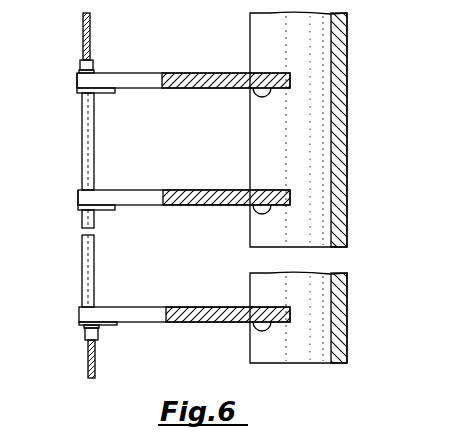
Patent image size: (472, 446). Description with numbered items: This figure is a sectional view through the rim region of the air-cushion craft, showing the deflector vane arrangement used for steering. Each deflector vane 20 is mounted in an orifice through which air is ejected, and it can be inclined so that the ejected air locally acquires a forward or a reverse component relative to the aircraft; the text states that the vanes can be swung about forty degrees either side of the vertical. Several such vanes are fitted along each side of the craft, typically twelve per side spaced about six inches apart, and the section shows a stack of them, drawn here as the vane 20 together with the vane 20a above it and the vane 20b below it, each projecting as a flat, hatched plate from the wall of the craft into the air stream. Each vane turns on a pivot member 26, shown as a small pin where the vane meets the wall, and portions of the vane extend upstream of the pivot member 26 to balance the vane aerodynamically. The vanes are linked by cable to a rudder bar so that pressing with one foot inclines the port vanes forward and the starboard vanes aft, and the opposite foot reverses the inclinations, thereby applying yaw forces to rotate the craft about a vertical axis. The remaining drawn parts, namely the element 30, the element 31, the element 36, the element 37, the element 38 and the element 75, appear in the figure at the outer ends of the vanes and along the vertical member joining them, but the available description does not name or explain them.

The deflector vane 20 is at (130, 189).
The upper shelf bracket 20a is at (125, 74).
The lower shelf bracket 20b is at (133, 307).
The pivot member 26 is at (256, 94).
The front flange 30 is at (77, 88).
The connecting rod 31 is at (94, 132).
The threaded rod 36 is at (90, 30).
The nut 37 is at (82, 62).
The washer 38 is at (77, 70).
The plate 75 is at (106, 96).